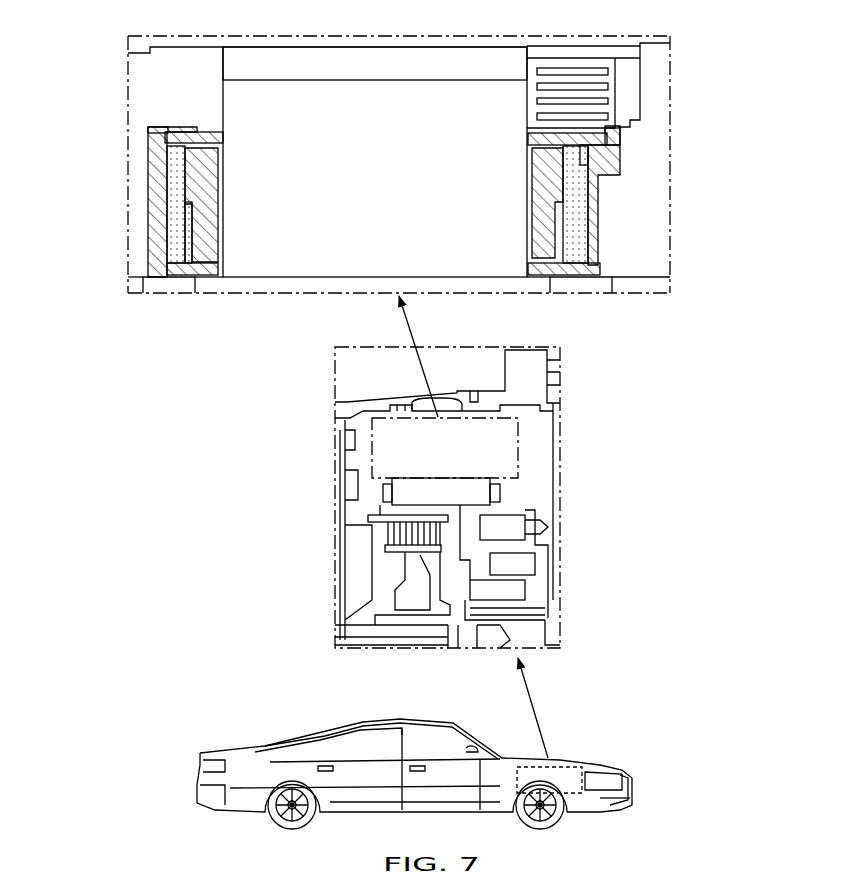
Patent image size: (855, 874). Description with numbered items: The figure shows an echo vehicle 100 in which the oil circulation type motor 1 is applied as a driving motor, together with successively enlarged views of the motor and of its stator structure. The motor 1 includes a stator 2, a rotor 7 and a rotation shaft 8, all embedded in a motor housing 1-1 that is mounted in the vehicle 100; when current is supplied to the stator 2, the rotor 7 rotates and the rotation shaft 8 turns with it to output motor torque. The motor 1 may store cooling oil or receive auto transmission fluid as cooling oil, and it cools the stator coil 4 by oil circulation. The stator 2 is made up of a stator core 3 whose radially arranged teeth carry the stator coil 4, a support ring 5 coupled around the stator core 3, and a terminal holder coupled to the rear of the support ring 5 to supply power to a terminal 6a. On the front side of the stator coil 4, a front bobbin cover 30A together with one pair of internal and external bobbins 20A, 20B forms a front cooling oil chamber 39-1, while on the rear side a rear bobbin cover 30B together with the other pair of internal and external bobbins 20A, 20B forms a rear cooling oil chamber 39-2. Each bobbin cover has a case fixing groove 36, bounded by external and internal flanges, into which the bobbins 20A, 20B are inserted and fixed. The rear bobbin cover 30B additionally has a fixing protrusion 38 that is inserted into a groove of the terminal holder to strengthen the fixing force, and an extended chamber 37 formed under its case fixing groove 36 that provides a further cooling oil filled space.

The motor 1 is at (419, 570).
The motor housing 1-1 is at (340, 415).
The stator 2 is at (453, 454).
The stator core 3 is at (373, 188).
The stator coil 4 is at (598, 172).
The support ring 5 is at (366, 62).
The terminal 6a is at (630, 73).
The rotor 7 is at (545, 520).
The rotation shaft 8 is at (545, 632).
The internal bobbin 20A is at (198, 282).
The external bobbin 20B is at (185, 135).
The front bobbin cover 30A is at (150, 172).
The rear bobbin cover 30B is at (598, 203).
The case fixing groove 36 is at (148, 139).
The extended chamber 37 is at (600, 152).
The fixing protrusion 38 is at (620, 120).
The front cooling oil chamber 39-1 is at (170, 233).
The rear cooling oil chamber 39-2 is at (580, 228).
The vehicle 100 is at (288, 741).